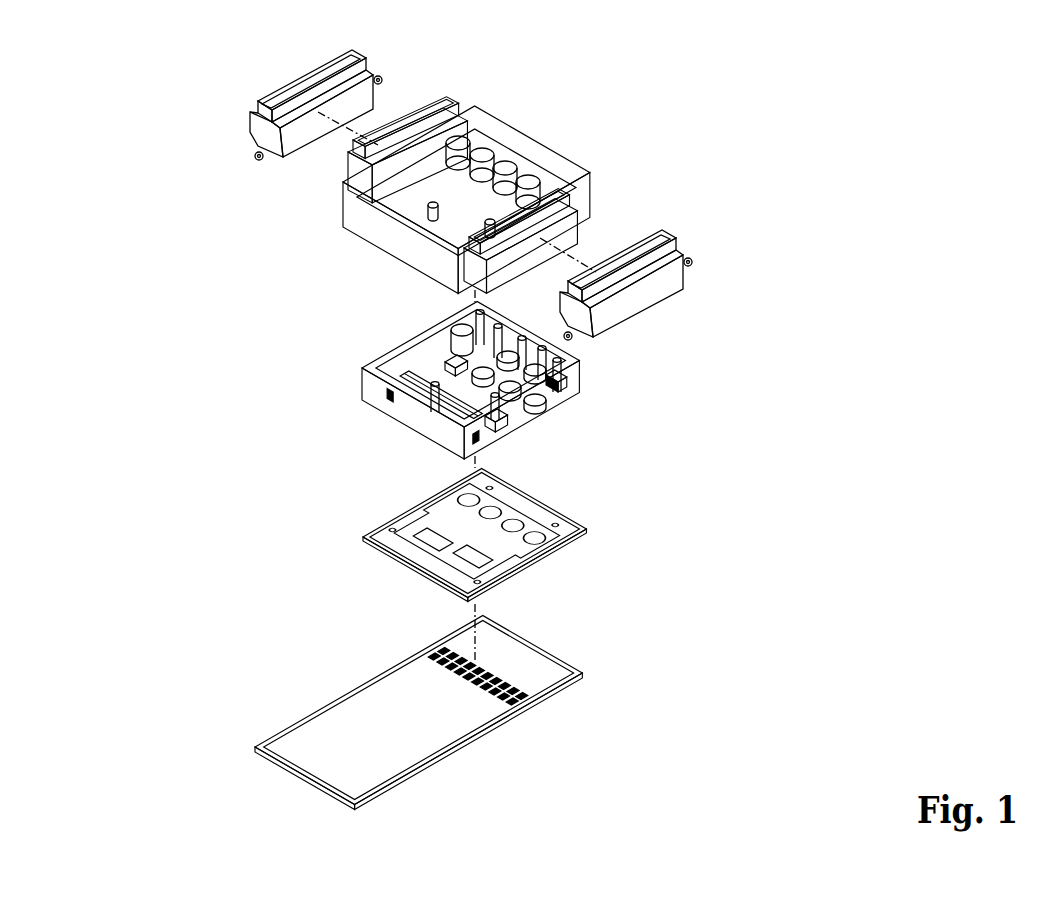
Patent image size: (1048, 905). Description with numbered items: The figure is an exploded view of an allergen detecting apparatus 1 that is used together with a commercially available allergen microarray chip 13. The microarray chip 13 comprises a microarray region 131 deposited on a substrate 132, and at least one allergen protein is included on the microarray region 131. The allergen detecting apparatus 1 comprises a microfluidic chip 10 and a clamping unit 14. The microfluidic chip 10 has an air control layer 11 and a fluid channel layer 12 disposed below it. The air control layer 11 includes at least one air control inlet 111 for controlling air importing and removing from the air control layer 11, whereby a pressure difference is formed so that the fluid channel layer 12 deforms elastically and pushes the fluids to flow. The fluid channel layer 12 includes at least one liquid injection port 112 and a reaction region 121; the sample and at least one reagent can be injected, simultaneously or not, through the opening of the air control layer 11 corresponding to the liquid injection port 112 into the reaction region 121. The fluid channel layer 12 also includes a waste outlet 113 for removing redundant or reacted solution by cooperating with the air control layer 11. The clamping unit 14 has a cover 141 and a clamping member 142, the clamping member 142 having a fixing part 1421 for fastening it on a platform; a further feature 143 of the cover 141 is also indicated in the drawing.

The allergen detecting apparatus 1 is at (725, 166).
The microfluidic chip 10 is at (282, 383).
The air control layer 11 is at (367, 392).
The air control inlet 111 is at (580, 355).
The liquid injection port 112 is at (562, 381).
The waste outlet 113 is at (503, 410).
The fluid channel layer 12 is at (394, 528).
The reaction region 121 is at (511, 559).
The allergen microarray chip 13 is at (356, 665).
The microarray region 131 is at (508, 690).
The substrate 132 is at (428, 749).
The clamping unit 14 is at (303, 288).
The cover 141 is at (349, 208).
The clamping member 142 is at (270, 160).
The fixing part 1421 is at (381, 76).
The cover side wall 143 is at (402, 237).